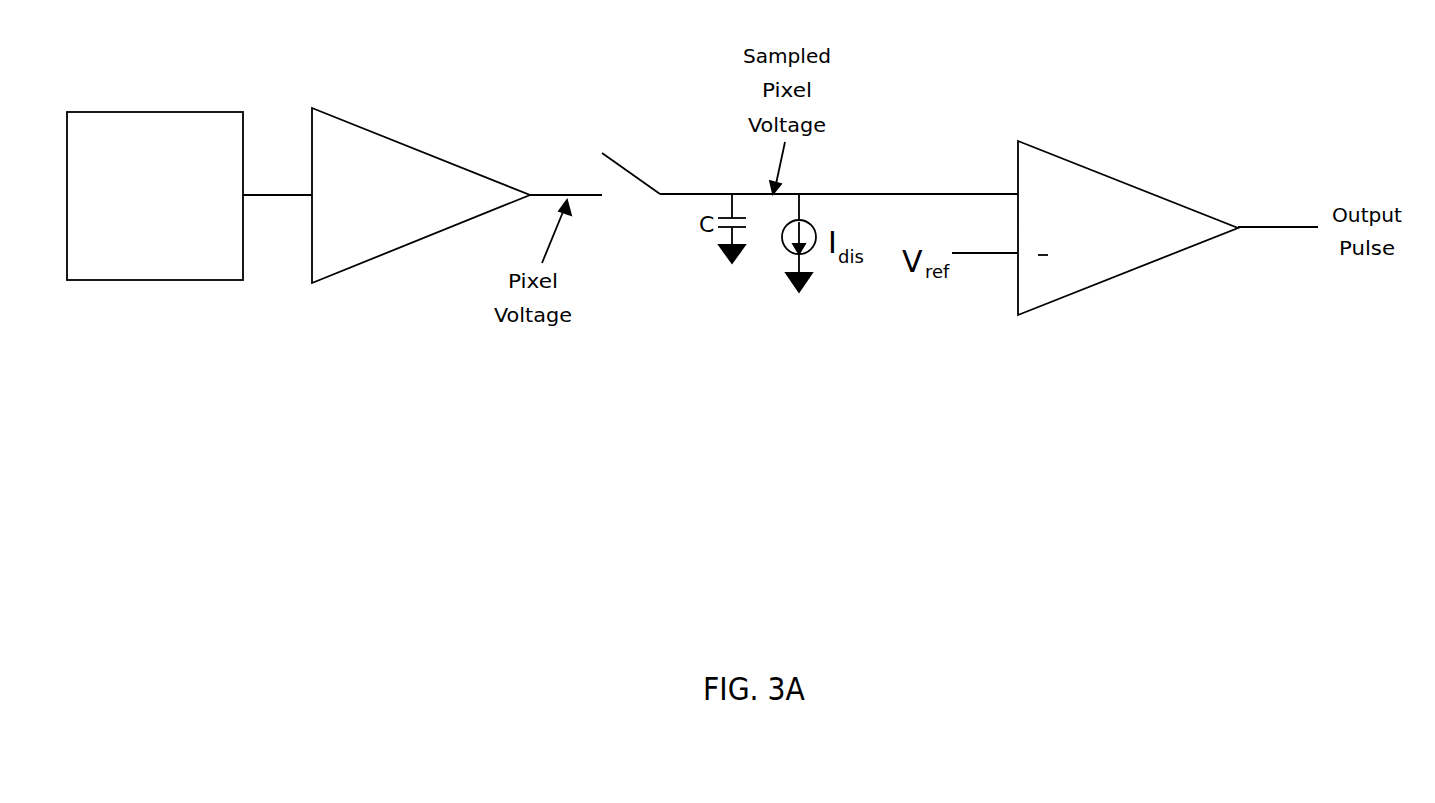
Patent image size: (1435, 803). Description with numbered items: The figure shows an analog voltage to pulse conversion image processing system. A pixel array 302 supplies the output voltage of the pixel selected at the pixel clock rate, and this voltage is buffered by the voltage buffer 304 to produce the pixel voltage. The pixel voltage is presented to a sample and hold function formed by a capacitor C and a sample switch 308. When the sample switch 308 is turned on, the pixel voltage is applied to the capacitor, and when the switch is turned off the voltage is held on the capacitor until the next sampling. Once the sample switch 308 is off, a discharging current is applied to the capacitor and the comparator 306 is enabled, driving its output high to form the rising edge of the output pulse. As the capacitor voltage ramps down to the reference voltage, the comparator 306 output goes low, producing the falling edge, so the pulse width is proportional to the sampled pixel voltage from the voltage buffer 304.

The pixel array 302 is at (157, 112).
The voltage buffer 304 is at (385, 135).
The comparator 306 is at (1117, 178).
The sample switch 308 is at (624, 164).